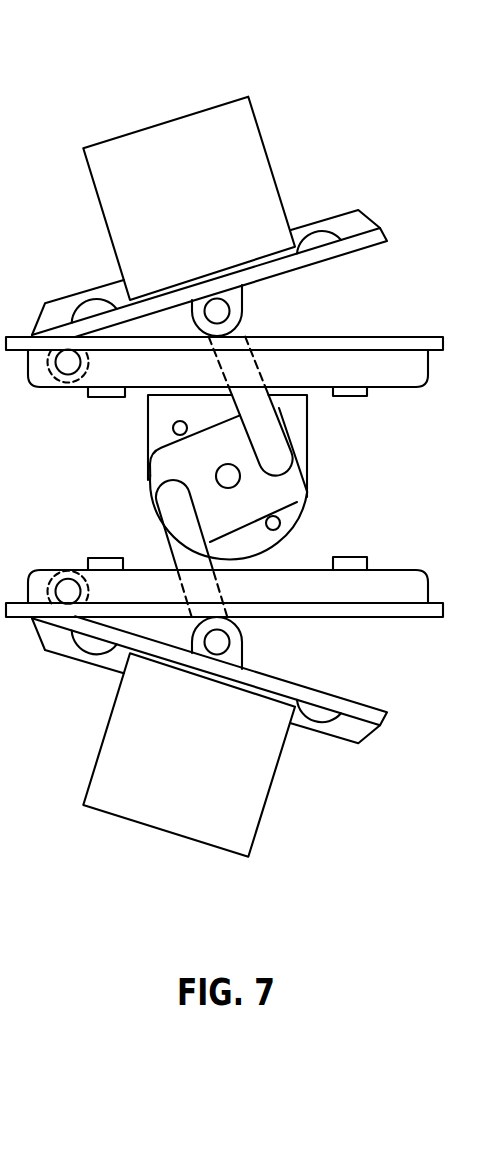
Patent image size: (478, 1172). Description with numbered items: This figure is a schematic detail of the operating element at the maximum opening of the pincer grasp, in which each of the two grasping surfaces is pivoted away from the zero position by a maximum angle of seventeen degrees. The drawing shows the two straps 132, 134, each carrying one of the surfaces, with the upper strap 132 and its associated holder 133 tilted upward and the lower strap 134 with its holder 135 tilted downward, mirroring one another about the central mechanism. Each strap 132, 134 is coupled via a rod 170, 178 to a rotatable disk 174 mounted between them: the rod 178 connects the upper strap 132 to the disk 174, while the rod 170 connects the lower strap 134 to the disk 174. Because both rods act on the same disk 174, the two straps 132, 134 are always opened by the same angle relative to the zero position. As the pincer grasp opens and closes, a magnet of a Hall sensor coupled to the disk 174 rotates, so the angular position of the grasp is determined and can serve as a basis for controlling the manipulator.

The strap 132 is at (165, 148).
The first cell holder plate 133 is at (364, 222).
The strap 134 is at (158, 808).
The second cell holder plate 135 is at (360, 733).
The rod 170 is at (183, 550).
The rotatable disk 174 is at (262, 487).
The rod 178 is at (270, 438).